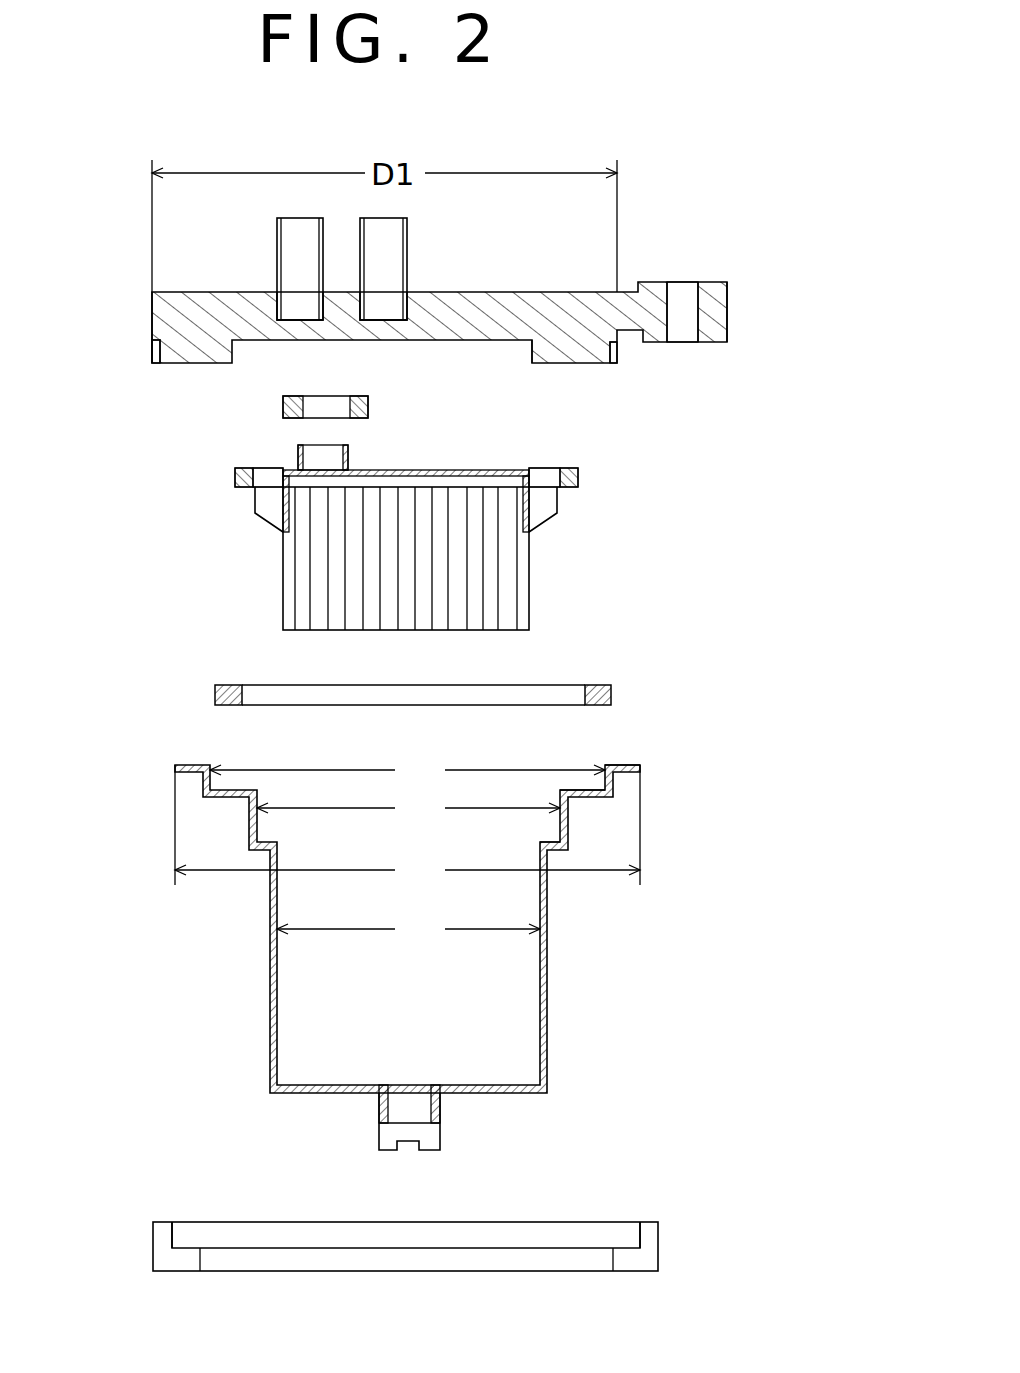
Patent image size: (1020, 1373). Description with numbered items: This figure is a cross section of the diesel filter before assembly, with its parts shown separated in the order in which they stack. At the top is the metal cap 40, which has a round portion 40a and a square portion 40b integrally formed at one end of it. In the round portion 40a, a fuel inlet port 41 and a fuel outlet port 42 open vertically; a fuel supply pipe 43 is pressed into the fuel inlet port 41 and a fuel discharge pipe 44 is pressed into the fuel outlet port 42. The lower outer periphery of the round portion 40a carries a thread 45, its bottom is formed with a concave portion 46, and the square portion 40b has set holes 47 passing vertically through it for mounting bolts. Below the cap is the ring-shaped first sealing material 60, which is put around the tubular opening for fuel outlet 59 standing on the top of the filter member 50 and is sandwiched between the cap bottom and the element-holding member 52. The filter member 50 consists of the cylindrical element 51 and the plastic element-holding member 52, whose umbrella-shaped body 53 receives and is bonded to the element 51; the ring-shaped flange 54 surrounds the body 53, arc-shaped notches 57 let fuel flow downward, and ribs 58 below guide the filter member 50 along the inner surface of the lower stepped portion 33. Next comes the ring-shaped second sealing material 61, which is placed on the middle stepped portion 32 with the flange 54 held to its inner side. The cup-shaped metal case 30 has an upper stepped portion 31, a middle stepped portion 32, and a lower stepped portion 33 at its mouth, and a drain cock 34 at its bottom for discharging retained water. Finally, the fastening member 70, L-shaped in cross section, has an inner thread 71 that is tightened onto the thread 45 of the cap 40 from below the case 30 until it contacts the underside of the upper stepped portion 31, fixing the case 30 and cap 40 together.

The case 30 is at (463, 958).
The upper stepped portion 31 is at (640, 769).
The middle stepped portion 32 is at (597, 793).
The lower stepped portion 33 is at (562, 845).
The drain cock 34 is at (432, 1133).
The cap 40 is at (735, 272).
The round portion 40a is at (152, 302).
The square portion 40b is at (727, 305).
The fuel inlet port 41 is at (387, 333).
The fuel outlet port 42 is at (300, 332).
The fuel supply pipe 43 is at (407, 243).
The fuel discharge pipe 44 is at (277, 243).
The thread 45 is at (152, 355).
The concave portion 46 is at (530, 352).
The set holes 47 is at (682, 292).
The filter member 50 is at (426, 523).
The element 51 is at (525, 614).
The element-holding member 52 is at (236, 481).
The body 53 is at (455, 470).
The flange 54 is at (240, 470).
The notches 57 is at (268, 474).
The ribs 58 is at (262, 505).
The opening for fuel outlet 59 is at (348, 449).
The first sealing material 60 is at (283, 406).
The second sealing material 61 is at (215, 696).
The fastening member 70 is at (477, 1208).
The thread 71 is at (173, 1234).